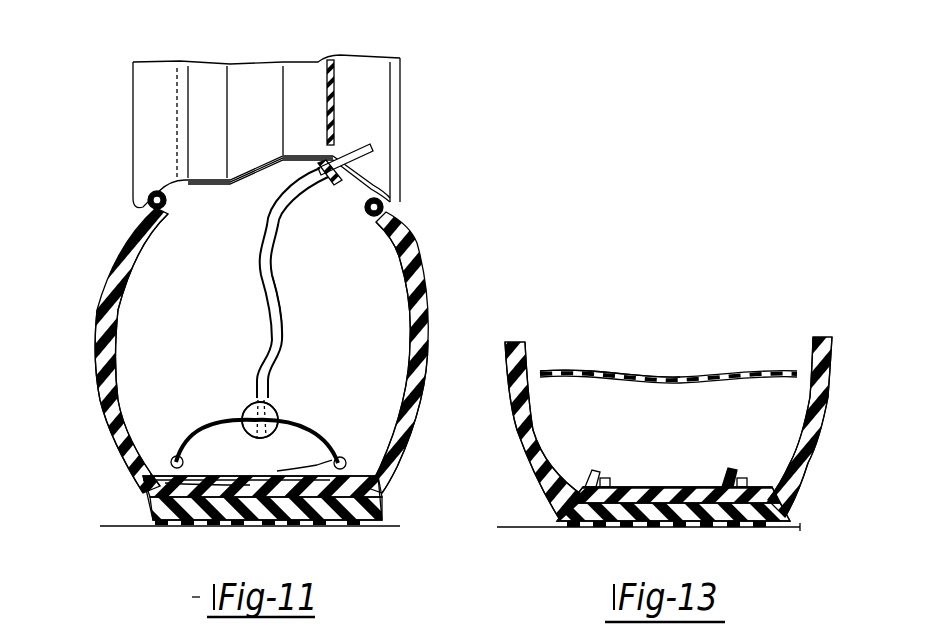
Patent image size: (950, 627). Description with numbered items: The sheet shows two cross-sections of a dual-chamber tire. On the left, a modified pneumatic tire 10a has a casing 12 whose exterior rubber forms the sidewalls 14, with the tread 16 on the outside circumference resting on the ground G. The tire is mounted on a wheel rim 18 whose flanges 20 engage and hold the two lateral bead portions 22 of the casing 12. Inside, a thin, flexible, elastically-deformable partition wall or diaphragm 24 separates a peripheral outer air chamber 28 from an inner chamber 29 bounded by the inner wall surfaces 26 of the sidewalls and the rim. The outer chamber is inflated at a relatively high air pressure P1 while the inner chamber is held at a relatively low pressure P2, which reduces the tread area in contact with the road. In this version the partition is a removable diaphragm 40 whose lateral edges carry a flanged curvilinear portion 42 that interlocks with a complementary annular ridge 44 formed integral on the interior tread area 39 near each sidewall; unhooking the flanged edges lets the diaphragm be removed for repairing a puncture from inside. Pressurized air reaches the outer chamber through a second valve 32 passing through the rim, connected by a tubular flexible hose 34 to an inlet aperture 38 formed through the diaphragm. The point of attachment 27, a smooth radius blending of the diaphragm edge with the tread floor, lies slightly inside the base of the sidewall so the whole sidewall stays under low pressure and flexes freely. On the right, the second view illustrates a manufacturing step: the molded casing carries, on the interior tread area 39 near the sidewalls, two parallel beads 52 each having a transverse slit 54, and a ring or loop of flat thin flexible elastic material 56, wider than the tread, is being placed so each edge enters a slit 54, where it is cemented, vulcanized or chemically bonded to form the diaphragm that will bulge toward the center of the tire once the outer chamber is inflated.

In FIG. 11, the pneumatic tire 10a is at (270, 385).
In FIG. 11, the casing 12 is at (124, 278).
In FIG. 13, the casing 12 is at (527, 347).
In FIG. 11, the sidewalls 14 is at (257, 350).
In FIG. 13, the sidewalls 14 is at (668, 415).
In FIG. 13, the tread 16 is at (560, 512).
In FIG. 11, the wheel rim 18 is at (262, 174).
In FIG. 11, the flanges 20 is at (133, 185).
In FIG. 11, the bead portions 22 is at (160, 210).
In FIG. 13, the diaphragm 24 is at (688, 376).
In FIG. 11, the inner wall surfaces 26 is at (118, 372).
In FIG. 13, the inner wall surfaces 26 is at (528, 410).
In FIG. 11, the point of attachment 27 is at (152, 494).
In FIG. 11, the outer air chamber 28 is at (232, 420).
In FIG. 11, the inner chamber 29 is at (352, 403).
In FIG. 11, the second valve 32 is at (372, 158).
In FIG. 11, the tubular flexible hose 34 is at (266, 300).
In FIG. 11, the inlet aperture 38 is at (262, 436).
In FIG. 11, the interior tread area 39 is at (248, 478).
In FIG. 13, the interior tread area 39 is at (643, 487).
In FIG. 11, the removable diaphragm 40 is at (308, 402).
In FIG. 11, the flanged curvilinear portion 42 is at (148, 489).
In FIG. 11, the annular ridge 44 is at (172, 462).
In FIG. 13, the bead 52 is at (583, 468).
In FIG. 13, the transverse slit 54 is at (610, 450).
In FIG. 13, the flat thin flexible elastic material 56 is at (606, 366).
In FIG. 11, the ground G is at (400, 528).
In FIG. 13, the ground G is at (795, 523).
In FIG. 11, the high air pressure P1 is at (222, 440).
In FIG. 11, the low pressure P2 is at (297, 307).